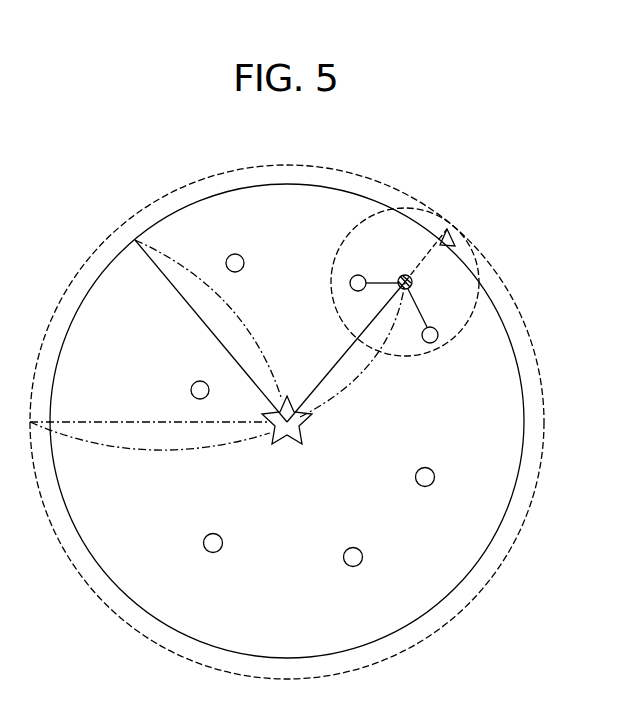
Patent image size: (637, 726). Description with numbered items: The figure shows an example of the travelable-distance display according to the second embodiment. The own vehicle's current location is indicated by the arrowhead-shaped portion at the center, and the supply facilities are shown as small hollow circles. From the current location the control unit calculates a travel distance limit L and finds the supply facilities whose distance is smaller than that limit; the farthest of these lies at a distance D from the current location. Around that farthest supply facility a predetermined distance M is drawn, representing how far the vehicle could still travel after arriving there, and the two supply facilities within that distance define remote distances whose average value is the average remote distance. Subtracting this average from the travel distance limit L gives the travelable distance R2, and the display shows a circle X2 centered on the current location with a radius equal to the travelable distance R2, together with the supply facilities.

The circle X2 is at (523, 460).
The travelable distance R2 is at (211, 331).
The travel distance limit L is at (150, 445).
The distance to farthest supply facility D is at (346, 352).
The predetermined distance M is at (405, 282).